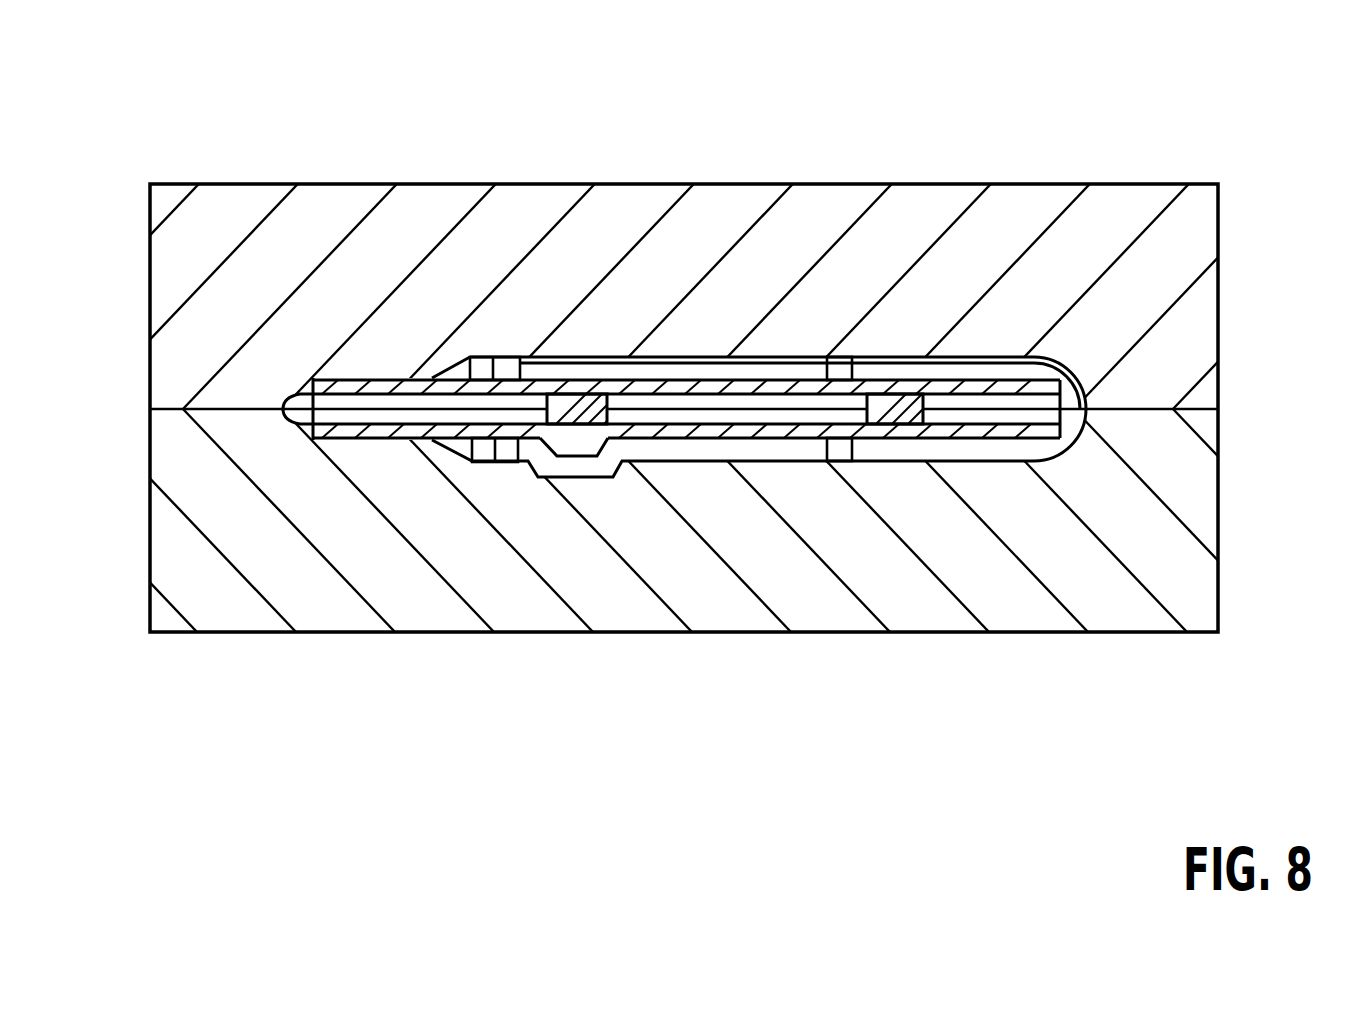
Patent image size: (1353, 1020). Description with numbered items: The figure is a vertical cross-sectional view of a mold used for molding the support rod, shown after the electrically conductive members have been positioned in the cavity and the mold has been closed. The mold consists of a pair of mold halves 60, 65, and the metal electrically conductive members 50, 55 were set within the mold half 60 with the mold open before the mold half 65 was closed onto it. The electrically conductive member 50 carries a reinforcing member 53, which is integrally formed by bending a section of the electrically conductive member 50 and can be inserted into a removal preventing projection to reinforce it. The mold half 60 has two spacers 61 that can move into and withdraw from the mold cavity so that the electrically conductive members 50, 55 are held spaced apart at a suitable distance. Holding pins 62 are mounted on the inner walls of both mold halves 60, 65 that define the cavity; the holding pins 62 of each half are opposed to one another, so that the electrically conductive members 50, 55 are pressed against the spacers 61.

The electrically conductive member 50 is at (700, 438).
The reinforcing member 53 is at (578, 466).
The electrically conductive member 55 is at (703, 378).
The mold half 60 is at (852, 662).
The spacer 61 is at (570, 397).
The holding pin 62 is at (507, 372).
The mold half 65 is at (927, 155).